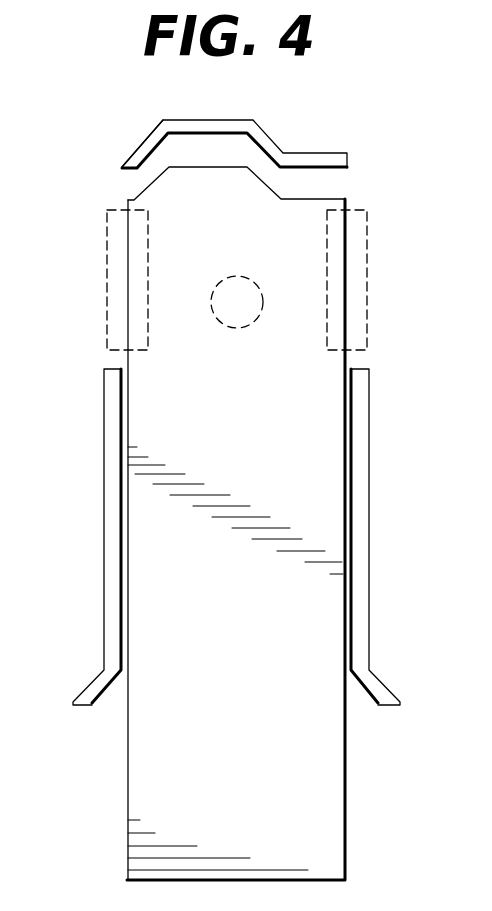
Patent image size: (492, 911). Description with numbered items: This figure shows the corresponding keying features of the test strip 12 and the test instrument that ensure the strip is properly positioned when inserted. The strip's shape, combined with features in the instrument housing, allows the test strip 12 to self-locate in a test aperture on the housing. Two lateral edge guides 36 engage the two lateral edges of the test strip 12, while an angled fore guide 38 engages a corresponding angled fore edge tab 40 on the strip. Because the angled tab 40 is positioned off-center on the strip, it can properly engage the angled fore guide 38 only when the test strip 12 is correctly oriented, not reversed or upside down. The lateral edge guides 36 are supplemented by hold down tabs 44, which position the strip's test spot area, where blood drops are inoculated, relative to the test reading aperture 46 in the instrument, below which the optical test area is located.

The test strip 12 is at (195, 723).
The lateral edge guides 36 is at (113, 508).
The angled fore guide 38 is at (207, 119).
The angled fore edge tab 40 is at (183, 165).
The hold down tabs 44 is at (105, 290).
The test reading aperture 46 is at (237, 328).